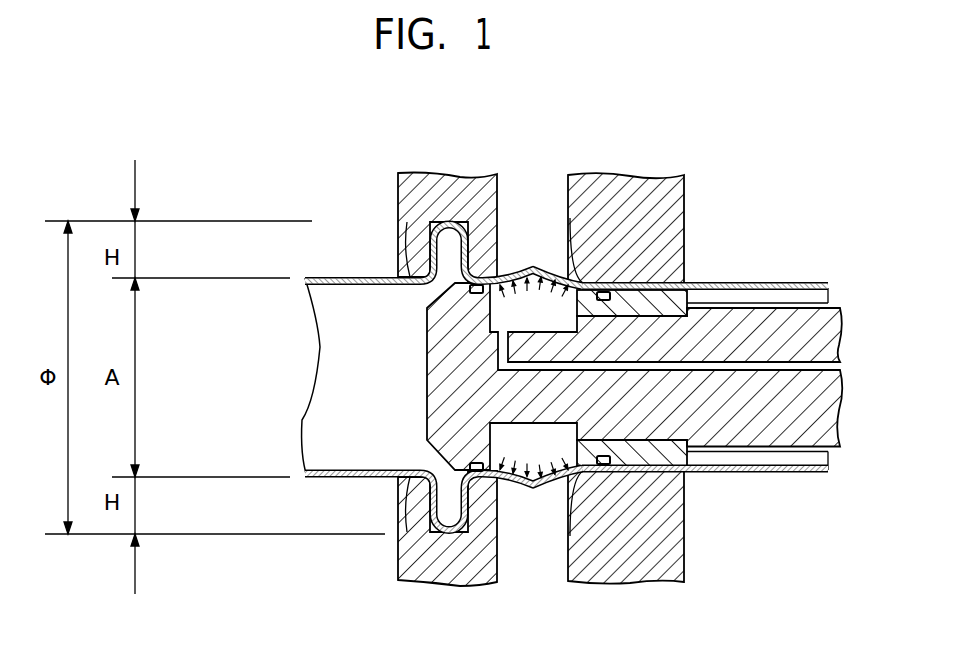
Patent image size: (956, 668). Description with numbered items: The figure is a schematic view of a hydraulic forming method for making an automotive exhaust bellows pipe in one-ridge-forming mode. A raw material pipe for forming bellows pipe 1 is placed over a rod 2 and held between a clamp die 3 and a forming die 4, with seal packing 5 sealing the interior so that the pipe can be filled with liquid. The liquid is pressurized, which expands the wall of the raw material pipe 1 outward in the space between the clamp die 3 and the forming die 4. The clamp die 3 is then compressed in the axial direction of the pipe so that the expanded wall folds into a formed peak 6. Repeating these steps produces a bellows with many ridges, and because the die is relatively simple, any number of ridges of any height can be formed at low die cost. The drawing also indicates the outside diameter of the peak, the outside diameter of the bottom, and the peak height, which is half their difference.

The raw material pipe for forming bellows pipe 1 is at (368, 277).
The rod 2 is at (790, 457).
The clamp die 3 is at (415, 193).
The forming die 4 is at (686, 199).
The seal packing 5 is at (478, 300).
The formed peak 6 is at (454, 218).